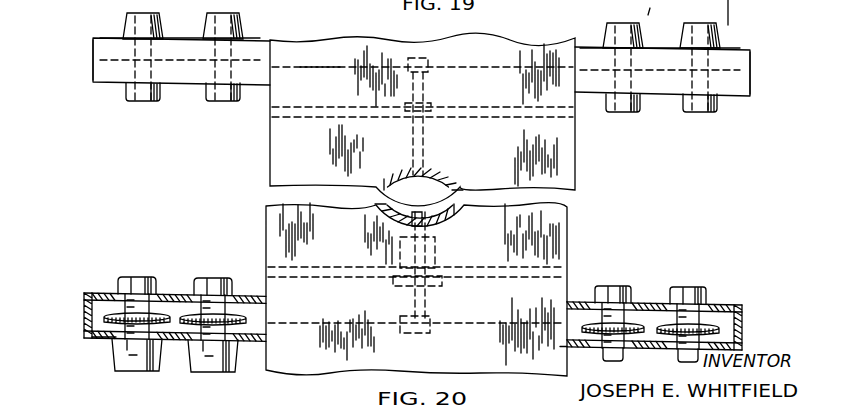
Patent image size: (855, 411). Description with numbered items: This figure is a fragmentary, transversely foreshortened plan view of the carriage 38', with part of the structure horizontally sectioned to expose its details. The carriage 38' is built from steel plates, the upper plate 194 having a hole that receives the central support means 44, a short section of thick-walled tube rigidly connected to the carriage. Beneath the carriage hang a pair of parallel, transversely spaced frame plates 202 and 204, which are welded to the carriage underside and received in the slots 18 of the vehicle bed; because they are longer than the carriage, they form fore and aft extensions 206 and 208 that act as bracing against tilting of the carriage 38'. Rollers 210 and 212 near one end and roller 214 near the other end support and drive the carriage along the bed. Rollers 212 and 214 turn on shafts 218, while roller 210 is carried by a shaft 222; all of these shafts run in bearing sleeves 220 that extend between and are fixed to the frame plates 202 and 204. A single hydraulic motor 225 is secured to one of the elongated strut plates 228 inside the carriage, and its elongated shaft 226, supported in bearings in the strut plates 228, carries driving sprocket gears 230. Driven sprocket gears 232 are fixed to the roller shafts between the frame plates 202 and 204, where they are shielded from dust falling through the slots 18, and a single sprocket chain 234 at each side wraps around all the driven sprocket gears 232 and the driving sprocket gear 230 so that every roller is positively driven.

In FIG. 19, the slots 18 is at (698, 12).
In FIG. 19, the carriage 38' is at (449, 119).
In FIG. 19, the central support means 44 is at (447, 172).
In FIG. 20, the central support means 44 is at (448, 212).
In FIG. 20, the upper plate 194 is at (575, 240).
In FIG. 19, the frame plate 202 is at (115, 83).
In FIG. 20, the frame plate 202 is at (100, 291).
In FIG. 19, the frame plate 204 is at (108, 38).
In FIG. 20, the frame plate 204 is at (100, 340).
In FIG. 19, the fore extension 206 is at (93, 52).
In FIG. 20, the fore extension 206 is at (84, 306).
In FIG. 19, the aft extension 208 is at (763, 74).
In FIG. 20, the aft extension 208 is at (744, 320).
In FIG. 20, the roller 210 is at (128, 372).
In FIG. 20, the roller 212 is at (215, 373).
In FIG. 19, the roller 214 is at (656, 7).
In FIG. 19, the shaft 218 is at (240, 96).
In FIG. 20, the shaft 218 is at (218, 277).
In FIG. 19, the bearing sleeve 220 is at (170, 99).
In FIG. 20, the bearing sleeve 220 is at (600, 289).
In FIG. 19, the shaft 222 is at (137, 90).
In FIG. 20, the shaft 222 is at (142, 277).
In FIG. 20, the hydraulic motor 225 is at (437, 250).
In FIG. 19, the shaft 226 is at (422, 90).
In FIG. 19, the strut plate 228 is at (320, 113).
In FIG. 20, the strut plate 228 is at (313, 268).
In FIG. 19, the driving sprocket gear 230 is at (440, 67).
In FIG. 20, the driving sprocket gear 230 is at (431, 322).
In FIG. 19, the driven sprocket gear 232 is at (92, 78).
In FIG. 20, the driven sprocket gear 232 is at (170, 316).
In FIG. 19, the sprocket chain 234 is at (335, 65).
In FIG. 20, the sprocket chain 234 is at (322, 322).